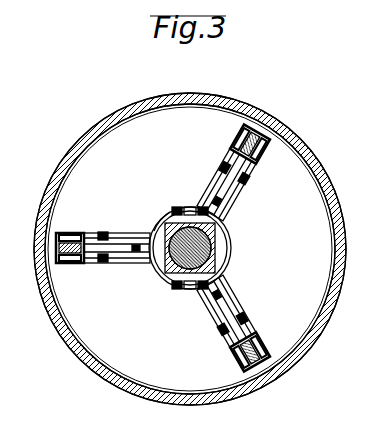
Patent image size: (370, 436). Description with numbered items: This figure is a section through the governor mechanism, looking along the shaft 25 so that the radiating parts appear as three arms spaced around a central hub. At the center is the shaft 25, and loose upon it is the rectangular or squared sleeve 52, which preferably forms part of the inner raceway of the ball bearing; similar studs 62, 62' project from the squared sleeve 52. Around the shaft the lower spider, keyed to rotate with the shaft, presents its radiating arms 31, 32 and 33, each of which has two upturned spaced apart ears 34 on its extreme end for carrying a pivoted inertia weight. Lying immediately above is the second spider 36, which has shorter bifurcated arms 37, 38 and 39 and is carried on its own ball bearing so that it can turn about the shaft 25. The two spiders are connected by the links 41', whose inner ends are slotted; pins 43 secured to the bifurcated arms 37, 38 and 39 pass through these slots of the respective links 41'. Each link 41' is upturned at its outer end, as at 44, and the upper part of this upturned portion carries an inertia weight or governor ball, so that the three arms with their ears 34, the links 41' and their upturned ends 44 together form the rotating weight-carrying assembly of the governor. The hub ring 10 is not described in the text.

The hub ring 10 is at (163, 272).
The shaft 25 is at (213, 247).
The rectangular sleeve 52 is at (231, 262).
The stud 62 is at (185, 306).
The stud 62' is at (181, 179).
The bifurcated arm 37 is at (173, 203).
The radiating arm 31 is at (98, 231).
The radiating arm 32 is at (236, 163).
The radiating arm 33 is at (247, 322).
The spider 36 is at (128, 231).
The bifurcated arm 38 is at (240, 192).
The bifurcated arm 39 is at (243, 313).
The link 41' is at (183, 255).
The pin 43 is at (190, 205).
The upturned portion of link 44 is at (257, 145).
The upturned ear 34 is at (236, 343).